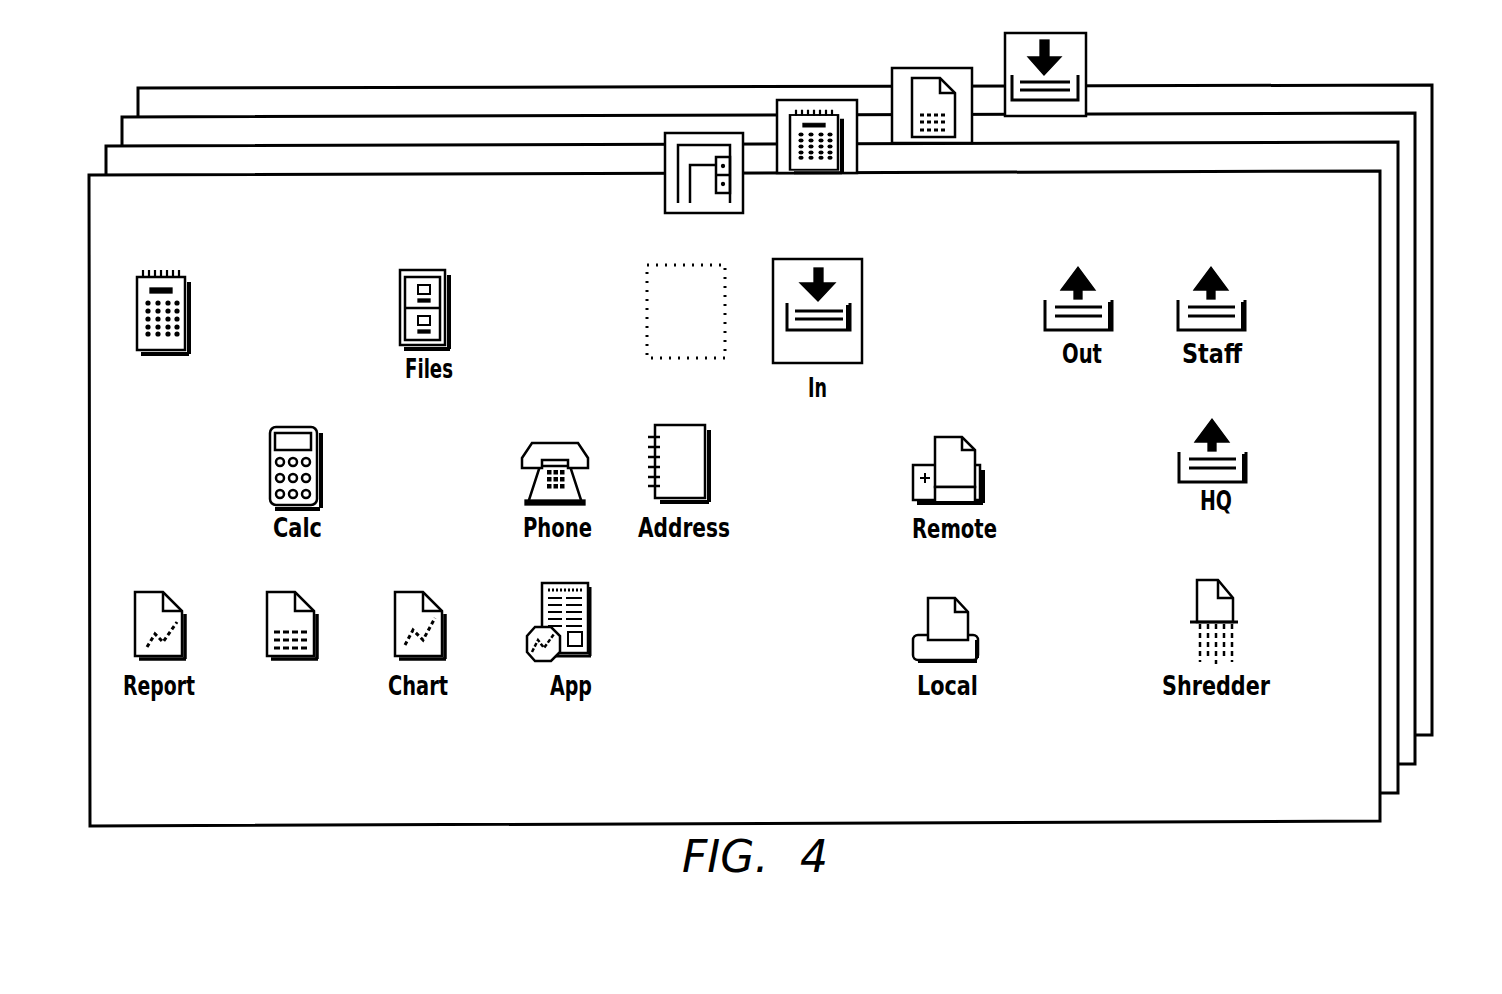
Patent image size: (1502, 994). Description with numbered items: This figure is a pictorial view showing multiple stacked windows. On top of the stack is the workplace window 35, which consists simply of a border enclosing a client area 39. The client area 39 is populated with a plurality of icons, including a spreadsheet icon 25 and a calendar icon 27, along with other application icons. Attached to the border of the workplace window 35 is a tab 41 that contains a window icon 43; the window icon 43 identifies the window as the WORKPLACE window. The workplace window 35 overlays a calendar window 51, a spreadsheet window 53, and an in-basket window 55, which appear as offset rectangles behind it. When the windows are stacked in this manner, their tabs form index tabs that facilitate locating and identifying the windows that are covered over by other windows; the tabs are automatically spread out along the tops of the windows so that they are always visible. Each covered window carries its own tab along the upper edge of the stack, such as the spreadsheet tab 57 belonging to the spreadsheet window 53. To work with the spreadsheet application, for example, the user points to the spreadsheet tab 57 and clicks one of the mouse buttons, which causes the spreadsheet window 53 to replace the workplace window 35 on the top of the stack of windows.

The spreadsheet icon 25 is at (306, 601).
The calendar icon 27 is at (190, 310).
The workplace window 35 is at (1286, 844).
The client area 39 is at (783, 662).
The tab 41 is at (669, 132).
The window icon 43 is at (703, 148).
The calendar window 51 is at (1398, 367).
The spreadsheet window 53 is at (1415, 322).
The in-basket window 55 is at (1433, 285).
The spreadsheet tab 57 is at (912, 68).